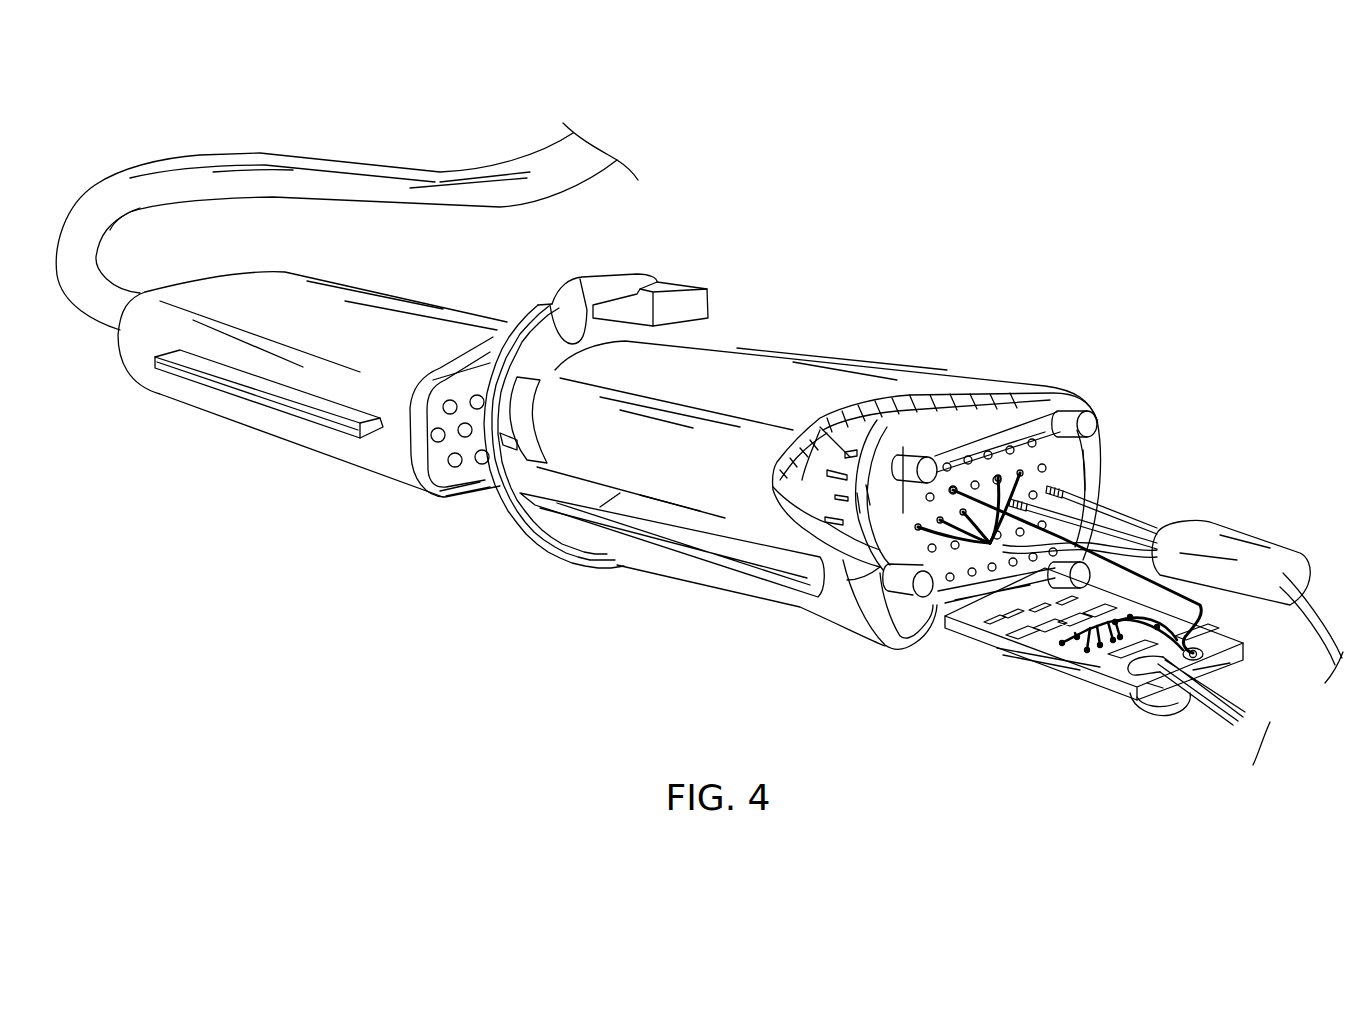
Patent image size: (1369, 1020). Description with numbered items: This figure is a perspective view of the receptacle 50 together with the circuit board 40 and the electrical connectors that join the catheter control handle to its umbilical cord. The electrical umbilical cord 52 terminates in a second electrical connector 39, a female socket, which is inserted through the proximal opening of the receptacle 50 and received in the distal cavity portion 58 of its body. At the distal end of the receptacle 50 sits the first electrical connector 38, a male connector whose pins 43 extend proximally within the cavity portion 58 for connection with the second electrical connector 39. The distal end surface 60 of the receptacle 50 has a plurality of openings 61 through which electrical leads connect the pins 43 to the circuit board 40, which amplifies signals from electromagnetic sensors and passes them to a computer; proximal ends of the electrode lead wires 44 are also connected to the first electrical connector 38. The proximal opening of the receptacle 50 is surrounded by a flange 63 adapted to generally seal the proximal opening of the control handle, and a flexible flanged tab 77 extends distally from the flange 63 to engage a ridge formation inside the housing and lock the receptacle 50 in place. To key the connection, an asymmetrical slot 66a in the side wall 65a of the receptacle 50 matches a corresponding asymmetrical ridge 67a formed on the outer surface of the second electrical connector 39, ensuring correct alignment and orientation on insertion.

The electrical umbilical cord 52 is at (428, 168).
The second electrical connector 39 is at (318, 460).
The asymmetrical ridge 67a is at (238, 398).
The surrounding flange 63 is at (507, 504).
The flexible flanged tab 77 is at (702, 293).
The receptacle 50 is at (768, 340).
The side wall 65a is at (692, 478).
The asymmetrical slot 66a is at (762, 583).
The distal cavity portion 58 is at (807, 482).
The pins 43 is at (827, 462).
The first electrical connector 38 is at (912, 430).
The openings 61 is at (1034, 443).
The electrode lead wires 44 is at (1130, 517).
The distal end surface 60 is at (908, 650).
The circuit board 40 is at (1072, 690).